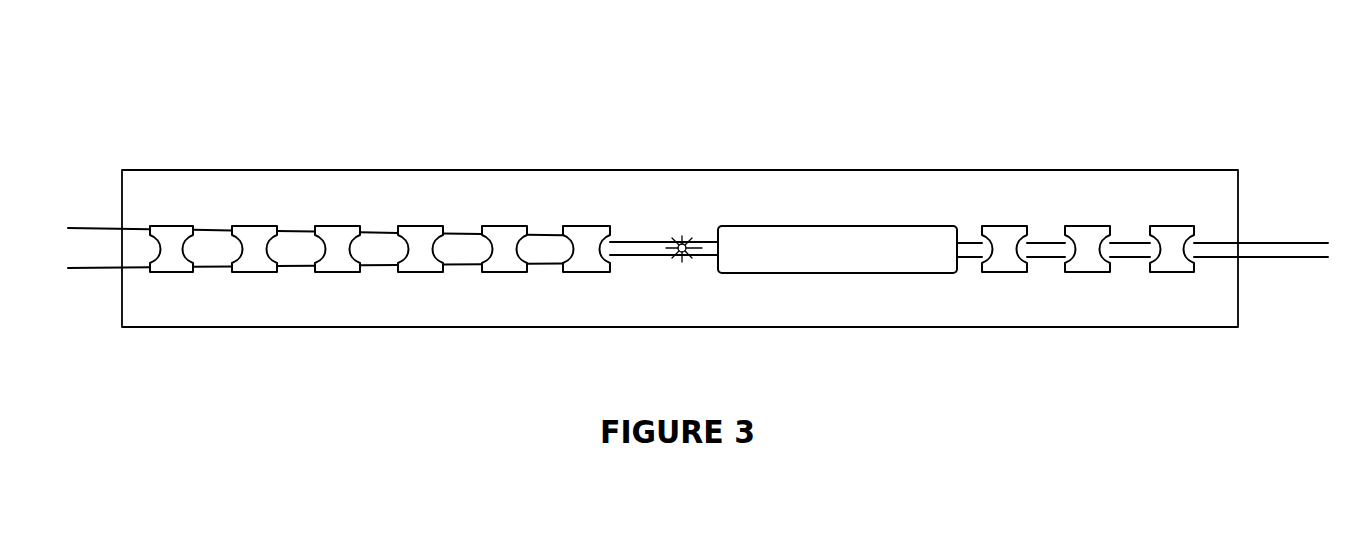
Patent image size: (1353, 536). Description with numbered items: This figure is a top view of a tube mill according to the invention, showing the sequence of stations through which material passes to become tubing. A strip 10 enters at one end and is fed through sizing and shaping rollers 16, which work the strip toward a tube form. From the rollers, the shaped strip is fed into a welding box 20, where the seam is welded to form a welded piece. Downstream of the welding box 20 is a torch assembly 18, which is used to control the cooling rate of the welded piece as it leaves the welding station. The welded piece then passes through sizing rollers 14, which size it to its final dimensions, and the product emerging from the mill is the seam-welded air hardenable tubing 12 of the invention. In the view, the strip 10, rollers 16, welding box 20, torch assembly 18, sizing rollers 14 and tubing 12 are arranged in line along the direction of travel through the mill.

The strip 10 is at (83, 228).
The seam-welded air hardenable tubing 12 is at (1300, 243).
The sizing rollers 14 is at (415, 190).
The sizing and shaping rollers 16 is at (1128, 190).
The torch assembly 18 is at (682, 243).
The welding box 20 is at (873, 230).